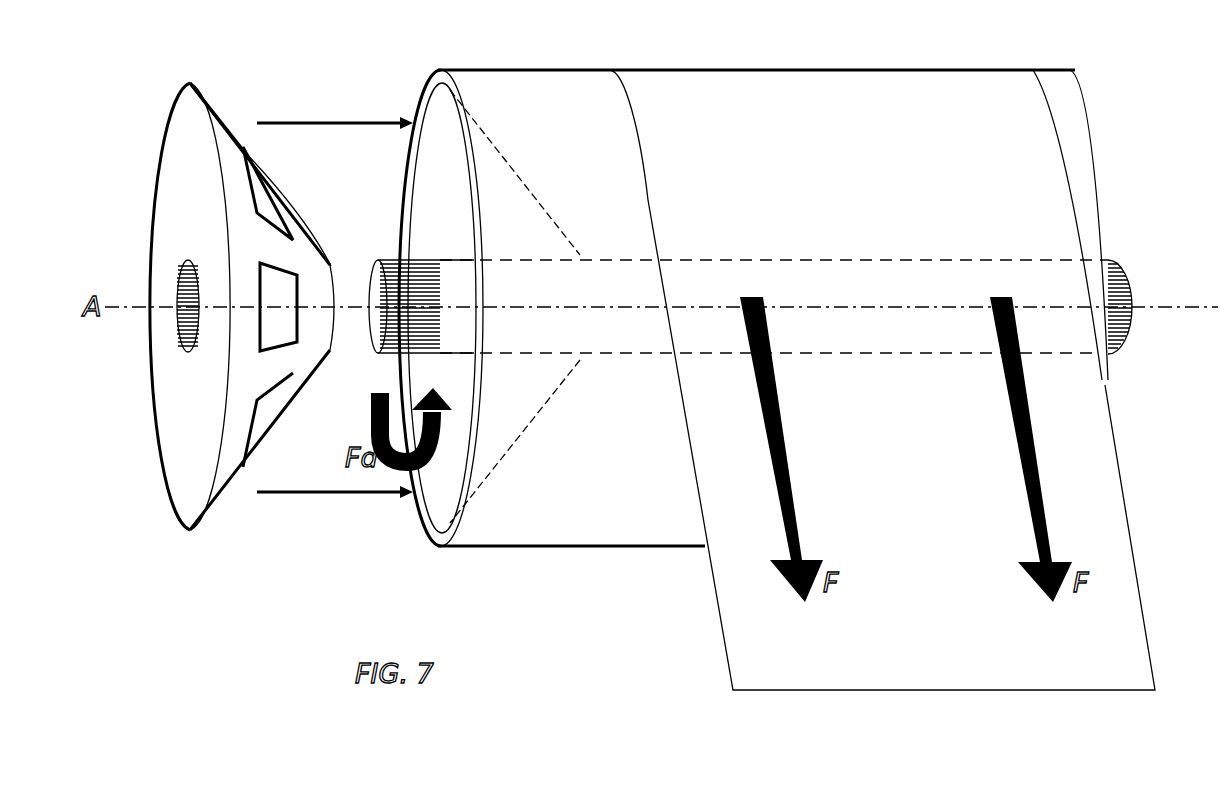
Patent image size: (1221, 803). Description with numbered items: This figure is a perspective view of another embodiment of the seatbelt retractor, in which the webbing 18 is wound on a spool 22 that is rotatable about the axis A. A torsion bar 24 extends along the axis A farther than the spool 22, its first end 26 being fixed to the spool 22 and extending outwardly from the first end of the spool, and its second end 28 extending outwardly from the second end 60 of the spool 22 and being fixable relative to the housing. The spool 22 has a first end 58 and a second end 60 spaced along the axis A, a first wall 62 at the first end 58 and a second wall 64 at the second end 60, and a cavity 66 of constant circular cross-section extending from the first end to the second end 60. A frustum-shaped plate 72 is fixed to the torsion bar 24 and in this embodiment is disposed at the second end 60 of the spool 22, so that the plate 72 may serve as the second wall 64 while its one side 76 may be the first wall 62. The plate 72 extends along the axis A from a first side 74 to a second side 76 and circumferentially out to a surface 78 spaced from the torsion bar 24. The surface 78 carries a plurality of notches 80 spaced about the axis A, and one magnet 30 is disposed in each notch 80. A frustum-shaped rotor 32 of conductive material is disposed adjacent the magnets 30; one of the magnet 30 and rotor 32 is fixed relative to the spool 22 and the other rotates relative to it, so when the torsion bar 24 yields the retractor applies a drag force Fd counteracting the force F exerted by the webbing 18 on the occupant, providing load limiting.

The webbing 18 is at (1140, 583).
The spool 22 is at (540, 66).
The torsion bar 24 is at (634, 355).
The first end 26 is at (388, 259).
The second end 28 is at (1131, 282).
The magnet 30 is at (297, 322).
The rotor 32 is at (510, 163).
The first end 58 is at (437, 66).
The second end 60 is at (1104, 127).
The first wall 62 is at (200, 431).
The second wall 64 is at (1106, 180).
The cavity 66 is at (441, 177).
The plate 72 is at (302, 216).
The first side 74 is at (338, 290).
The second side 76 is at (152, 171).
The surface 78 is at (226, 129).
The notches 80 is at (250, 420).